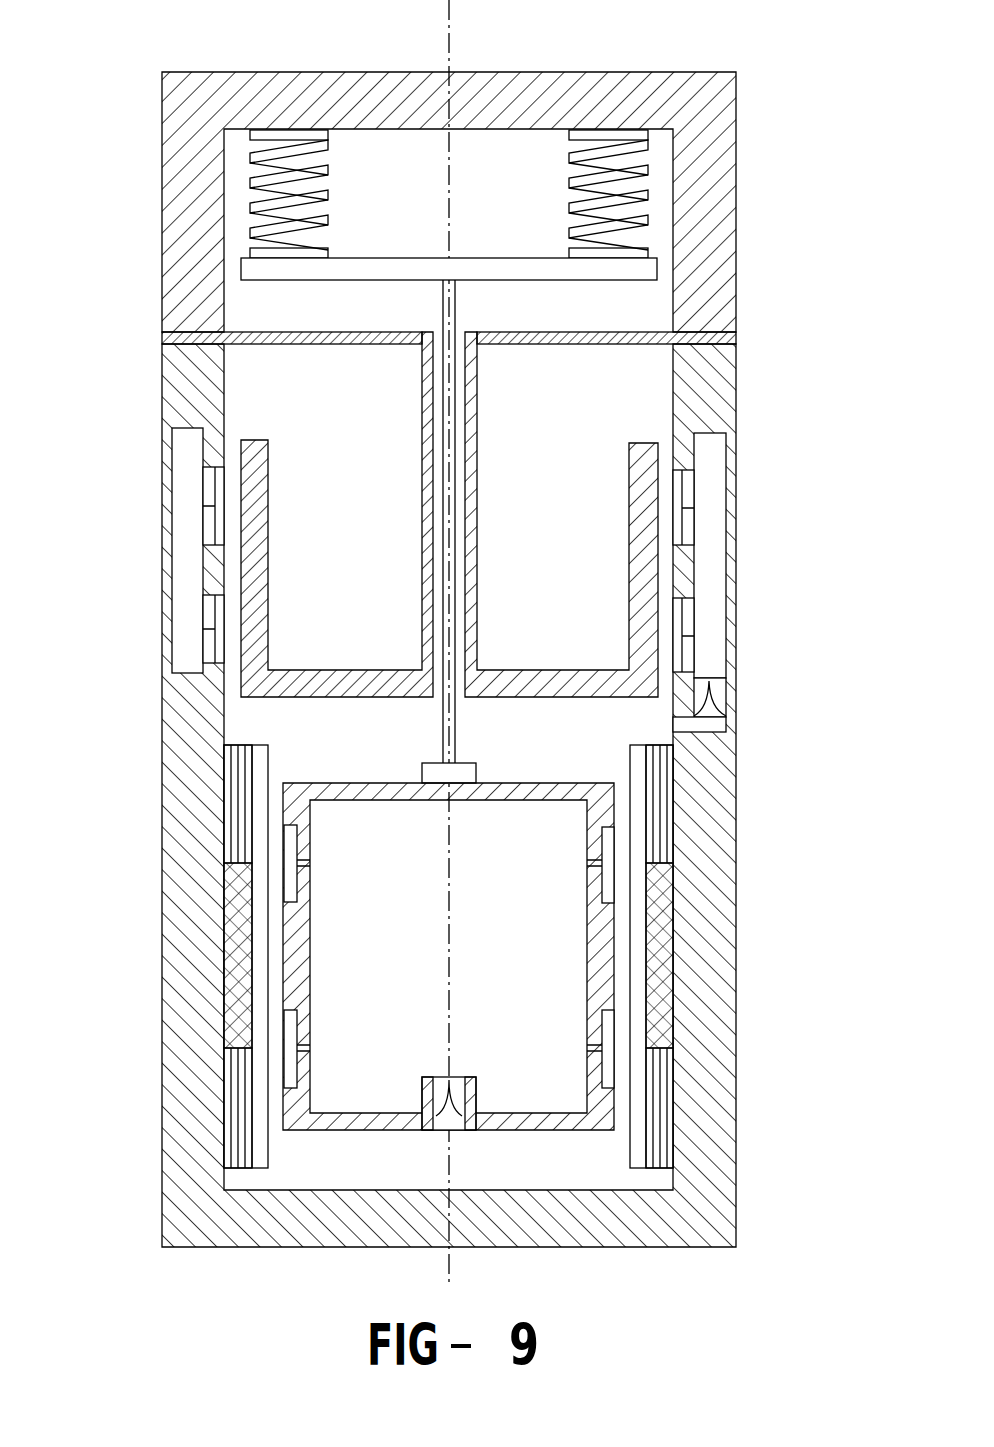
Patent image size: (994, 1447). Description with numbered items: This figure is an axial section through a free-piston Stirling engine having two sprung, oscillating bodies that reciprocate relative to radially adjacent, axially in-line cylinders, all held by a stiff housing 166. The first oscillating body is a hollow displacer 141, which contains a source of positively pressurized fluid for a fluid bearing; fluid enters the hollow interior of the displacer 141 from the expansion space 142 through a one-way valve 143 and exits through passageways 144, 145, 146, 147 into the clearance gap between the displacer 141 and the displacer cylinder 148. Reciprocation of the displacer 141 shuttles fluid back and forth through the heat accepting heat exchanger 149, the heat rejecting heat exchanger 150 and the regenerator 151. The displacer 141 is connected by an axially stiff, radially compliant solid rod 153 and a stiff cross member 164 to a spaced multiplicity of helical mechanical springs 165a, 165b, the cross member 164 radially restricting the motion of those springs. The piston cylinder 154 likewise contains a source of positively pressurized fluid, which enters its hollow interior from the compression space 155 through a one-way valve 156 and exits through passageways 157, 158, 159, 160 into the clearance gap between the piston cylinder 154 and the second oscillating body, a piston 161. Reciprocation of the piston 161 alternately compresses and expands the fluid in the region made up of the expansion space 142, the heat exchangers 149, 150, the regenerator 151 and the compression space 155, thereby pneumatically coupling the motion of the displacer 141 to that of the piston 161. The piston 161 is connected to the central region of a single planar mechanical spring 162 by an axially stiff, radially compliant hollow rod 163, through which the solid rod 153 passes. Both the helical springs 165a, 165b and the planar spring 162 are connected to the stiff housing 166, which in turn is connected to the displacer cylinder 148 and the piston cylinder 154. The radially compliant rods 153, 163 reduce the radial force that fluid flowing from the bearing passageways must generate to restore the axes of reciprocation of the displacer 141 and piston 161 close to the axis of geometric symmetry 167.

The displacer 141 is at (302, 792).
The expansion space 142 is at (372, 1177).
The one-way valve 143 is at (455, 1118).
The passageway 144 is at (298, 1050).
The passageway 145 is at (298, 866).
The passageway 146 is at (597, 1050).
The passageway 147 is at (597, 866).
The displacer cylinder 148 is at (632, 762).
The heat accepting heat exchanger 149 is at (238, 1112).
The heat rejecting heat exchanger 150 is at (238, 806).
The regenerator 151 is at (238, 958).
The solid rod 153 is at (456, 300).
The piston cylinder 154 is at (683, 410).
The compression space 155 is at (410, 739).
The one-way valve 156 is at (708, 708).
The passageway 157 is at (688, 635).
The passageway 158 is at (688, 508).
The passageway 159 is at (212, 632).
The passageway 160 is at (212, 503).
The piston 161 is at (637, 512).
The planar mechanical spring 162 is at (345, 346).
The hollow rod 163 is at (425, 512).
The stiff cross member 164 is at (402, 275).
The helical mechanical spring 165a is at (262, 181).
The helical mechanical spring 165b is at (637, 215).
The stiff housing 166 is at (190, 246).
The axis of geometric symmetry 167 is at (455, 30).